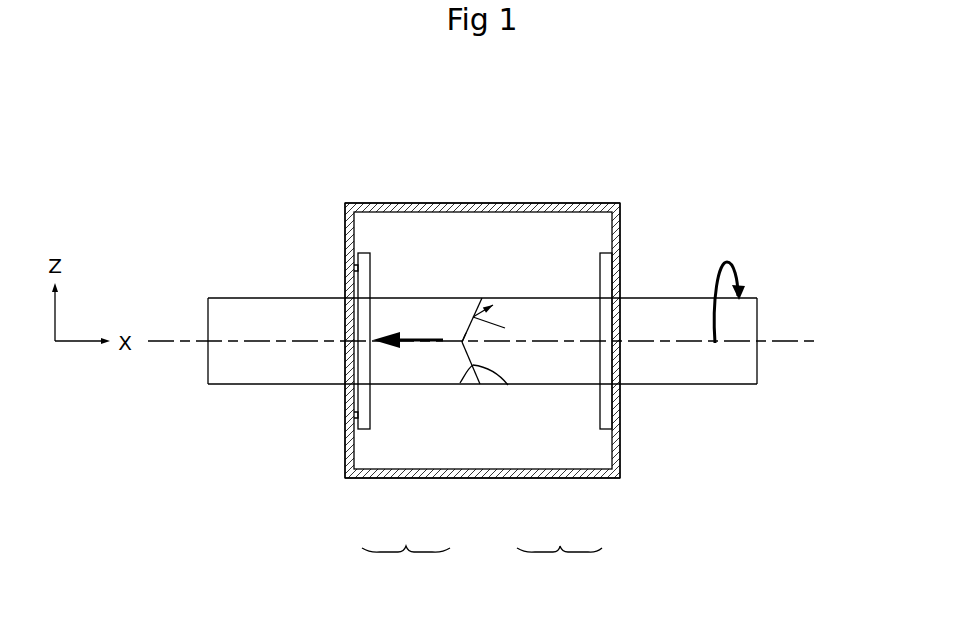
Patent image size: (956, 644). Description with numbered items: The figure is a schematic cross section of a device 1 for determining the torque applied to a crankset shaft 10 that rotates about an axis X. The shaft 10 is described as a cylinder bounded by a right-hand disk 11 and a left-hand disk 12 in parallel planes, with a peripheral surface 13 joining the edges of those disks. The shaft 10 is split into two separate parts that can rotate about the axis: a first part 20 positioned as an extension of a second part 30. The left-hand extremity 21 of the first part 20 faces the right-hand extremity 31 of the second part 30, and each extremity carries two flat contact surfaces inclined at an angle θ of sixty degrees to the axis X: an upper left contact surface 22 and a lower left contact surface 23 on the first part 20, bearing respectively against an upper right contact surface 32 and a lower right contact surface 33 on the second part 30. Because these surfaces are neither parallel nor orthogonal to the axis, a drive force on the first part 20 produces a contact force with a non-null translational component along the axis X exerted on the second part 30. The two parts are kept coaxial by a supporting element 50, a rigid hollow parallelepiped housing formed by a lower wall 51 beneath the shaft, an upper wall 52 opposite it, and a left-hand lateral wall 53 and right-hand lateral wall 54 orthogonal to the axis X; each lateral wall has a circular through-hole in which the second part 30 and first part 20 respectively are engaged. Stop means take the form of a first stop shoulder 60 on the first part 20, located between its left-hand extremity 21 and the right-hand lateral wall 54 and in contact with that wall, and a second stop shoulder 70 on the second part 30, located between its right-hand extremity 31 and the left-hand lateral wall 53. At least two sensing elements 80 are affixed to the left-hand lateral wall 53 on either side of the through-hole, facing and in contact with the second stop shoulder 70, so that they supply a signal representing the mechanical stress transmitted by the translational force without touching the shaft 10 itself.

The device 1 is at (663, 160).
The shaft 10 is at (660, 342).
The right-hand disk 11 is at (758, 310).
The left-hand disk 12 is at (207, 310).
The peripheral surface 13 is at (235, 298).
The first part 20 is at (555, 308).
The left-hand extremity 21 is at (559, 568).
The upper left contact surface 22 is at (505, 328).
The lower left contact surface 23 is at (508, 385).
The second part 30 is at (410, 310).
The right-hand extremity 31 is at (406, 568).
The upper right contact surface 32 is at (462, 342).
The lower right contact surface 33 is at (460, 383).
The supporting element 50 is at (347, 203).
The lower wall 51 is at (498, 478).
The upper wall 52 is at (478, 203).
The left-hand lateral wall 53 is at (345, 463).
The right-hand lateral wall 54 is at (620, 463).
The first stop shoulder 60 is at (607, 303).
The second stop shoulder 70 is at (360, 323).
The sensing element 80 is at (357, 270).